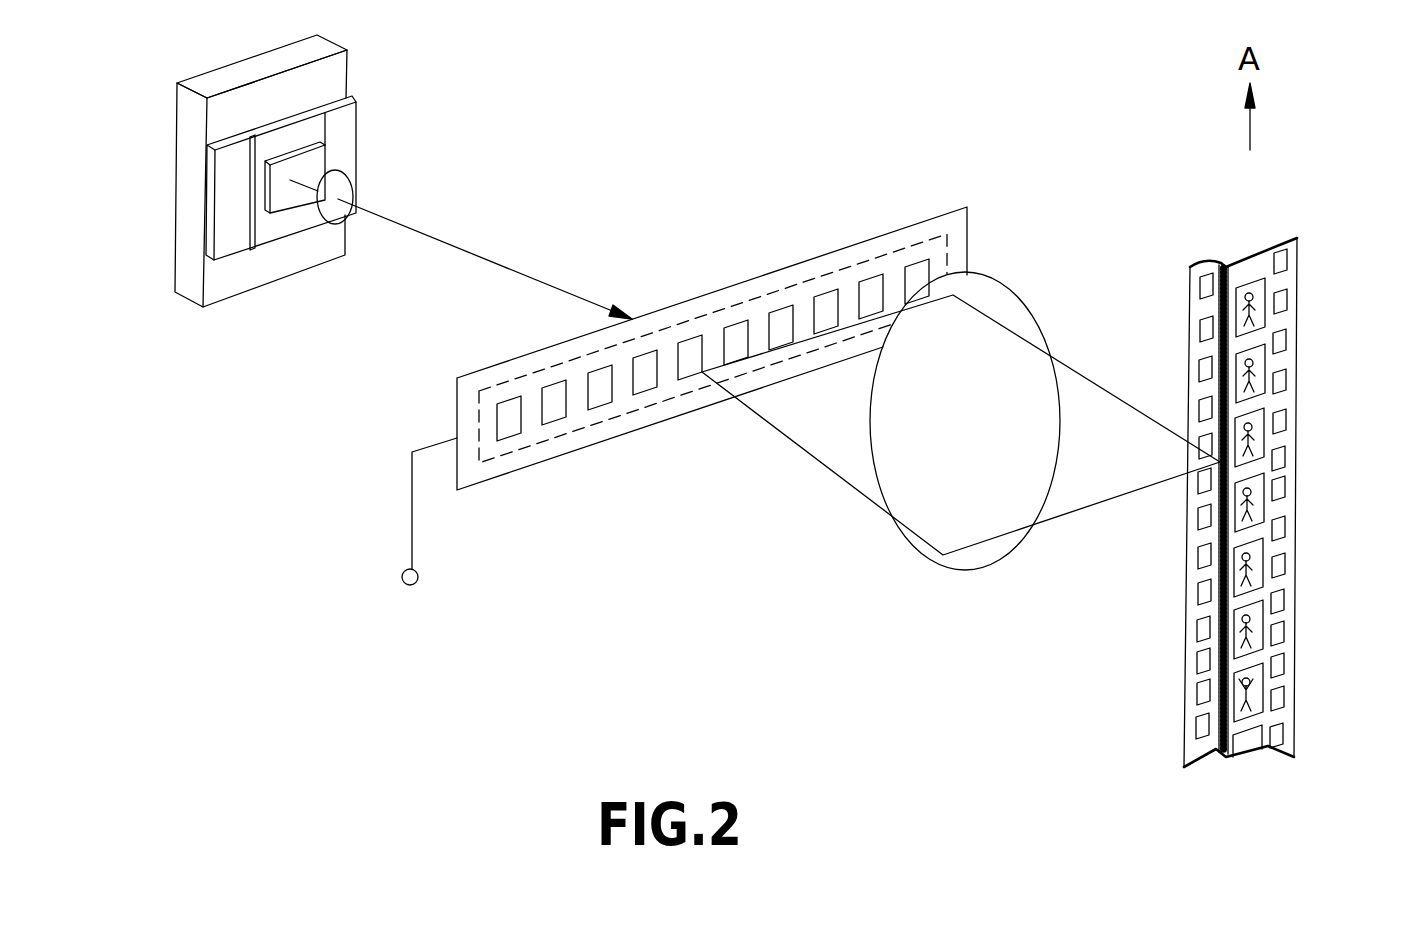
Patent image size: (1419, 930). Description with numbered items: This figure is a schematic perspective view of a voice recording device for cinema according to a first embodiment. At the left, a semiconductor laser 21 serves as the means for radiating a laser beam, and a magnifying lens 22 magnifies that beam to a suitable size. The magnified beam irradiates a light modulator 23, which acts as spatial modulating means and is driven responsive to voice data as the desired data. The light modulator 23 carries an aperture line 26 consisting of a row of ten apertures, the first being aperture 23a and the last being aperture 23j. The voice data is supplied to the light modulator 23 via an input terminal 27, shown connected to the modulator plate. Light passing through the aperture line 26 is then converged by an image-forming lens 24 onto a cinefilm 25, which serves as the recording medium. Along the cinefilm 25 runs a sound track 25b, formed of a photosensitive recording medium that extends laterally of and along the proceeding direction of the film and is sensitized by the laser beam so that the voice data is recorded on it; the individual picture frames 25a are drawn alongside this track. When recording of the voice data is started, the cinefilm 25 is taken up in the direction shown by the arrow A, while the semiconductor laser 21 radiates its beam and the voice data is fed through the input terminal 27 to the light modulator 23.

The semiconductor laser 21 is at (318, 130).
The magnifying lens 22 is at (342, 188).
The light modulator 23 is at (712, 346).
The aperture 23a is at (513, 430).
The aperture 23j is at (912, 265).
The image-forming lens 24 is at (1000, 297).
The cinefilm 25 is at (1246, 474).
The film picture frame 25a is at (1265, 287).
The sound track 25b is at (1223, 262).
The aperture line 26 is at (740, 303).
The input terminal 27 is at (410, 585).